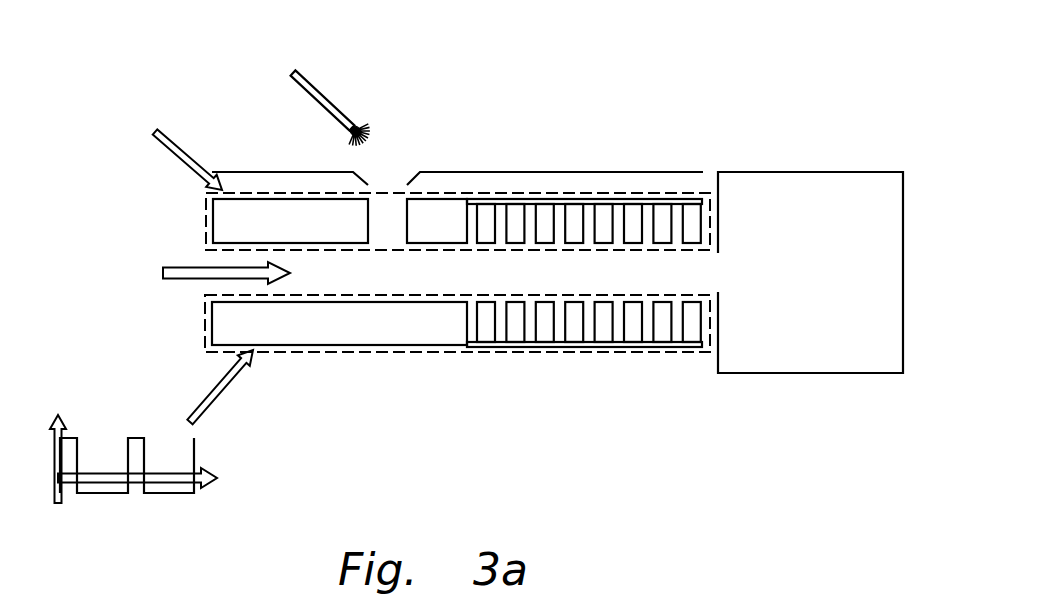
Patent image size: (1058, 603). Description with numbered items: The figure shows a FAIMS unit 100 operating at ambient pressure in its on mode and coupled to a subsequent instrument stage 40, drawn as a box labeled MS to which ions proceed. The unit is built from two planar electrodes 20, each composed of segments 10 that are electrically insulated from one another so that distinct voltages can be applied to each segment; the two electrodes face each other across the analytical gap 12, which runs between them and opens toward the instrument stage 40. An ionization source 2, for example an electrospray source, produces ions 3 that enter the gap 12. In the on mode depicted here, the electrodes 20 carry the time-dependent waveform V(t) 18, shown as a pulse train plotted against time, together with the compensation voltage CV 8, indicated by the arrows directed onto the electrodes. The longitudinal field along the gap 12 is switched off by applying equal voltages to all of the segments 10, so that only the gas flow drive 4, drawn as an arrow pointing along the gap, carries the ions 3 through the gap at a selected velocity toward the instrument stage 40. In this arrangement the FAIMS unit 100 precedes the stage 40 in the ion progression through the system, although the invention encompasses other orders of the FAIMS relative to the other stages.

The FAIMS unit 100 is at (660, 97).
The ionization source 2 is at (302, 92).
The ions 3 is at (375, 128).
The gas flow drive 4 is at (175, 262).
The CV 8 is at (155, 132).
The segments 10 is at (271, 237).
The analytical gap 12 is at (619, 286).
The V(t) 18 is at (135, 435).
The planar electrodes 20 is at (205, 217).
The instrument stage 40 is at (791, 329).